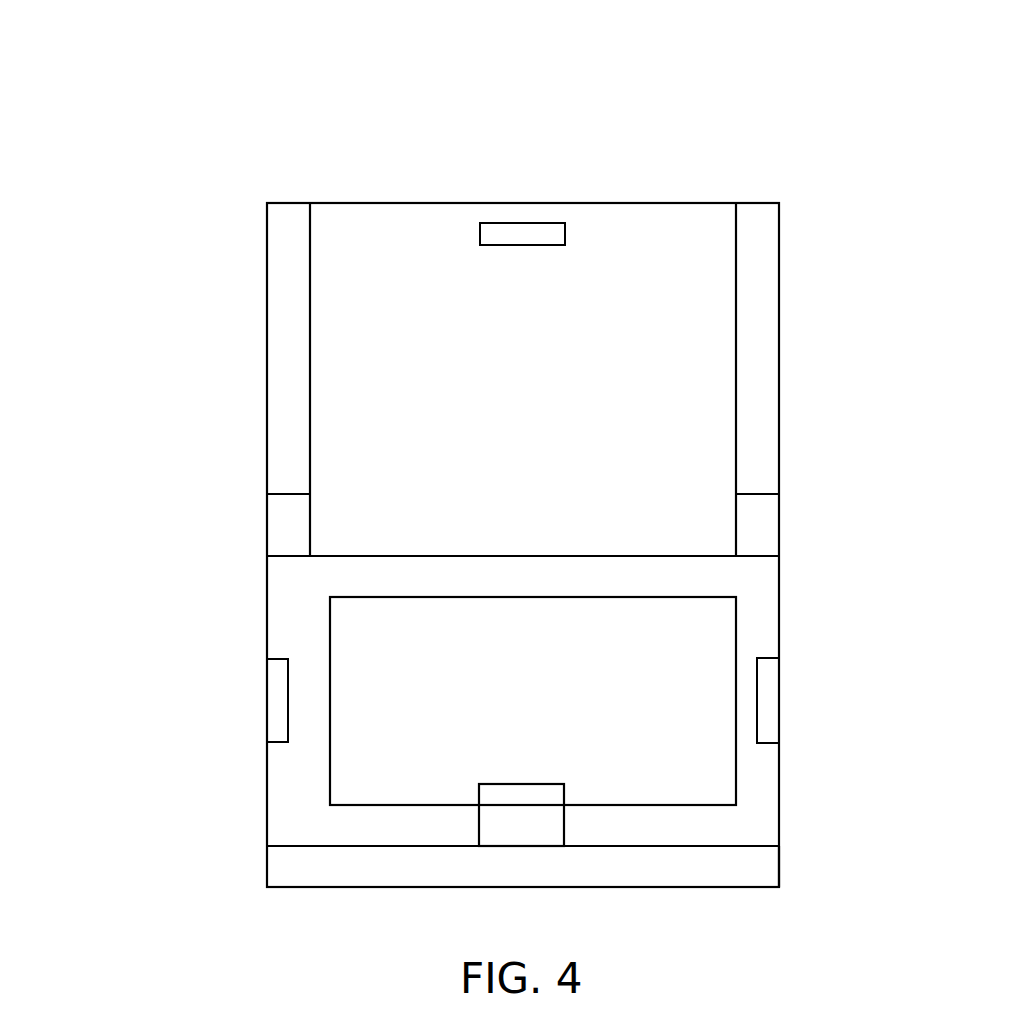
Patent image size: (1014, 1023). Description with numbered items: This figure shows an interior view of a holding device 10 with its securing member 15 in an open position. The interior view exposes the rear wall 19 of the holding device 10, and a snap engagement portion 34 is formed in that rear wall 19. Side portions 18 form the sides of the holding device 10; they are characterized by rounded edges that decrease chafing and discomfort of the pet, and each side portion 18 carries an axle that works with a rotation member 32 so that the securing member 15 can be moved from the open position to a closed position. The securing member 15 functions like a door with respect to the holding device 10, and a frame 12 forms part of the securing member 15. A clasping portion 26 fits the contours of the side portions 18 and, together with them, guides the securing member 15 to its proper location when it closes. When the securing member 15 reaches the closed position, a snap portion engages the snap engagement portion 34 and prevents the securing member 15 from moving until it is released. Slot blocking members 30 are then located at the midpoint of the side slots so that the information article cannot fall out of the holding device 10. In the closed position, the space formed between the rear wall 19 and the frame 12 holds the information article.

The holding device 10 is at (130, 160).
The frame 12 is at (282, 800).
The securing member 15 is at (815, 843).
The side portion 18 is at (280, 345).
The rear wall 19 is at (380, 270).
The clasping portion 26 is at (520, 818).
The slot blocking member 30 is at (272, 700).
The rotation member 32 is at (277, 515).
The snap engagement portion 34 is at (523, 232).